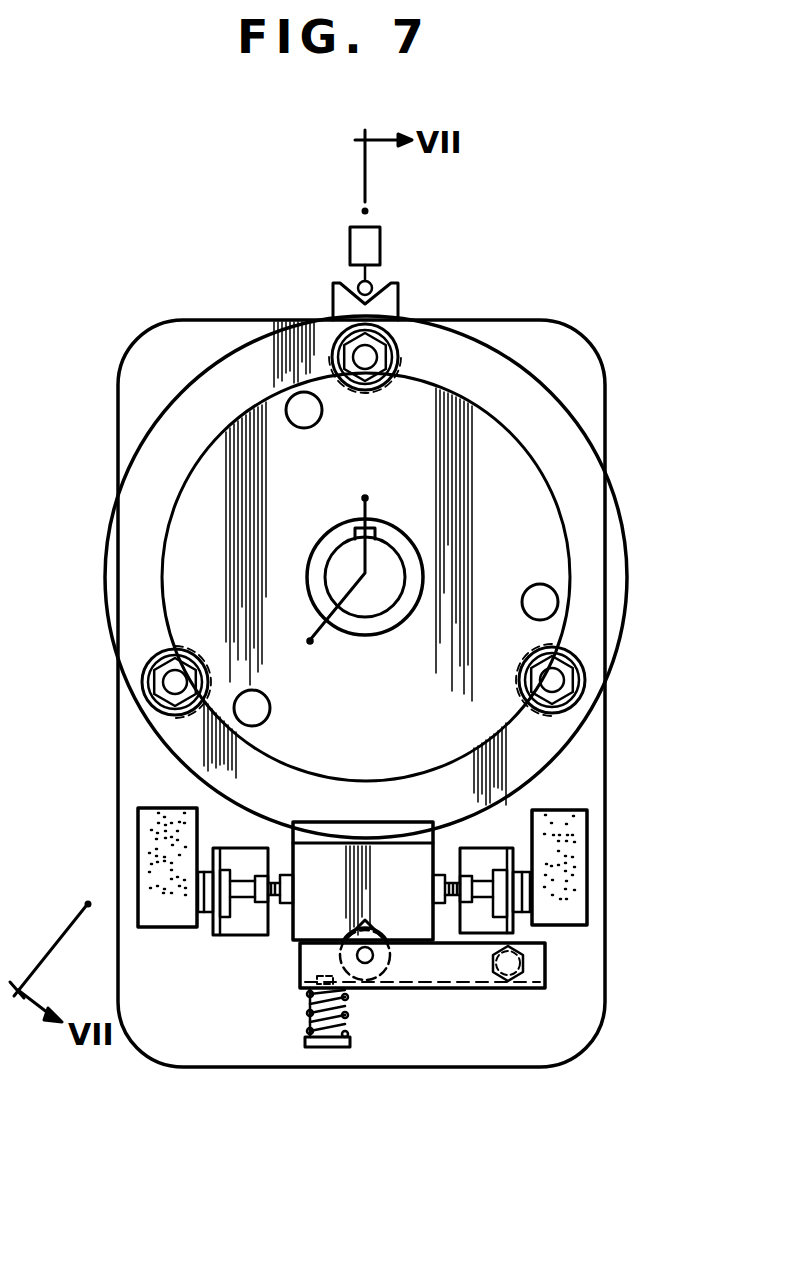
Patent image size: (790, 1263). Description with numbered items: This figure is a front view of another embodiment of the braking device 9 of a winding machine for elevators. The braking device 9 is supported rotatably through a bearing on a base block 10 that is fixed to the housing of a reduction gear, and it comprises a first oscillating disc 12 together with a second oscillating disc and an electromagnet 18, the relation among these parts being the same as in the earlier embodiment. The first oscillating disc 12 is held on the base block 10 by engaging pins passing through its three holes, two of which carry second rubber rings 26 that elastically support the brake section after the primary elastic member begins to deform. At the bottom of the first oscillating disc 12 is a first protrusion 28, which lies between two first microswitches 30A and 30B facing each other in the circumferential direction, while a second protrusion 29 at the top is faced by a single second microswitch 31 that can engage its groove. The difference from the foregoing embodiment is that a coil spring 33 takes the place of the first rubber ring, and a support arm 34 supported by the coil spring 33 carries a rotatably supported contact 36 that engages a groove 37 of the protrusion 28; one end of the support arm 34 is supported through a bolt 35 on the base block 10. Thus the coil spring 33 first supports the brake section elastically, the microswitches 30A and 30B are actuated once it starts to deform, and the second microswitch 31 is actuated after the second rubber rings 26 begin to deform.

The braking device 9 is at (630, 554).
The base block 10 is at (605, 750).
The first oscillating disc 12 is at (108, 527).
The electromagnet 18 is at (543, 497).
The second rubber rings 26 is at (397, 357).
The first protrusion 28 is at (437, 843).
The second protrusion 29 is at (398, 300).
The first microswitch 30A is at (138, 858).
The first microswitch 30B is at (587, 860).
The second microswitch 31 is at (380, 248).
The coil spring 33 is at (305, 1010).
The support arm 34 is at (418, 975).
The bolt 35 is at (508, 982).
The contact 36 is at (345, 928).
The groove 37 is at (375, 932).